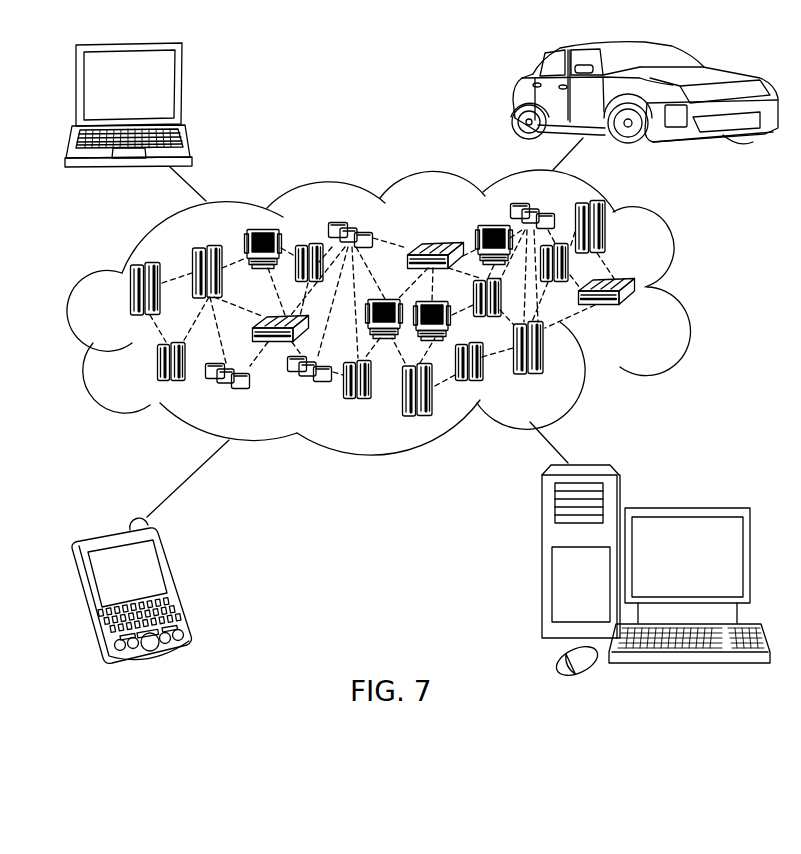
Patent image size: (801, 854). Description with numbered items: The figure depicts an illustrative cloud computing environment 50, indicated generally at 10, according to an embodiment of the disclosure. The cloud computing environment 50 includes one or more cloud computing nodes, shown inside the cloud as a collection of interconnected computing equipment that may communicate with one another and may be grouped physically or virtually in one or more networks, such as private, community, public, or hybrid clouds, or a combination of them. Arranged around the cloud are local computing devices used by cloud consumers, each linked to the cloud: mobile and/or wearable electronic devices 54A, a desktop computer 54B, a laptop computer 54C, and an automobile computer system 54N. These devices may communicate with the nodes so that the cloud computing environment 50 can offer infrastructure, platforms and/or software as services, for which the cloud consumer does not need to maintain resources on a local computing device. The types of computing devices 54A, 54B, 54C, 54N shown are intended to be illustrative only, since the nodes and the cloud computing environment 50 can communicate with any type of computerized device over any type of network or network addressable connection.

The network system 10 is at (640, 313).
The cloud computing environment 50 is at (683, 293).
The mobile and/or wearable electronic devices 54A is at (180, 582).
The desktop computer 54B is at (684, 507).
The laptop computer 54C is at (183, 90).
The automobile computer system 54N is at (517, 98).